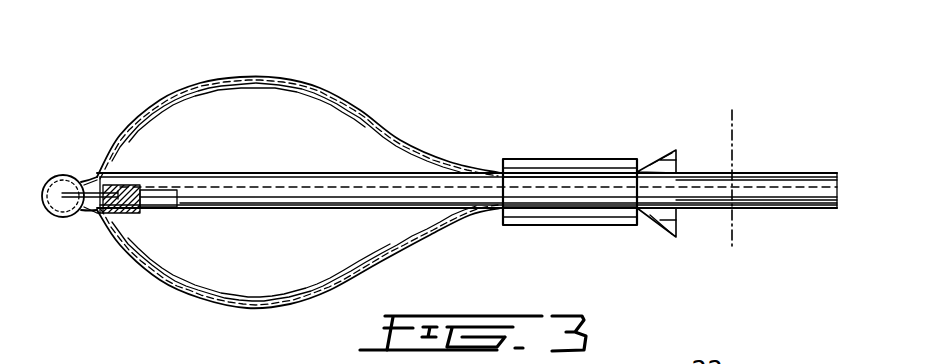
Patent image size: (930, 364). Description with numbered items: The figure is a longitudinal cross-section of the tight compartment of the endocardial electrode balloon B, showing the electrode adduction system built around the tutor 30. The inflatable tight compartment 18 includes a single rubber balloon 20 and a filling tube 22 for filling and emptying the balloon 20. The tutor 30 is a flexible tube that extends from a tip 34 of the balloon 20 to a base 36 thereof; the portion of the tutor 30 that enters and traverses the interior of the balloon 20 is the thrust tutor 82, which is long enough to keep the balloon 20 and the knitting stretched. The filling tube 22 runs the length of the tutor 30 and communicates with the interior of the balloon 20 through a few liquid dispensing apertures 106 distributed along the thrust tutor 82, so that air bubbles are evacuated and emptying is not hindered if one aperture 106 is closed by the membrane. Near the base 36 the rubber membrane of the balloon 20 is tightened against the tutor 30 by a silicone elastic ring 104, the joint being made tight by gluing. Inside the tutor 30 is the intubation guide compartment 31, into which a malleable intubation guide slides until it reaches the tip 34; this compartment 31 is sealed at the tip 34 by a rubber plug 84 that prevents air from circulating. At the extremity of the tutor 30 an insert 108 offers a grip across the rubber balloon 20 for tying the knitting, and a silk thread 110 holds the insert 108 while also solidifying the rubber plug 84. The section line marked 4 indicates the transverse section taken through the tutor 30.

The inflatable tight compartment 18 is at (232, 79).
The rubber balloon 20 is at (312, 93).
The endocardial electrode balloon B is at (422, 113).
The base 36 is at (468, 168).
The liquid dispensing apertures 106 is at (498, 163).
The silicone elastic ring 104 is at (593, 163).
The tutor 30 is at (790, 173).
The section line 4- 4 is at (762, 122).
The thrust tutor 82 is at (275, 210).
The filling tube 22 is at (152, 177).
The insert 108 is at (54, 186).
The silk thread 110 is at (68, 212).
The tip 34 is at (90, 216).
The rubber plug 84 is at (128, 207).
The intubation guide compartment 31 is at (165, 202).